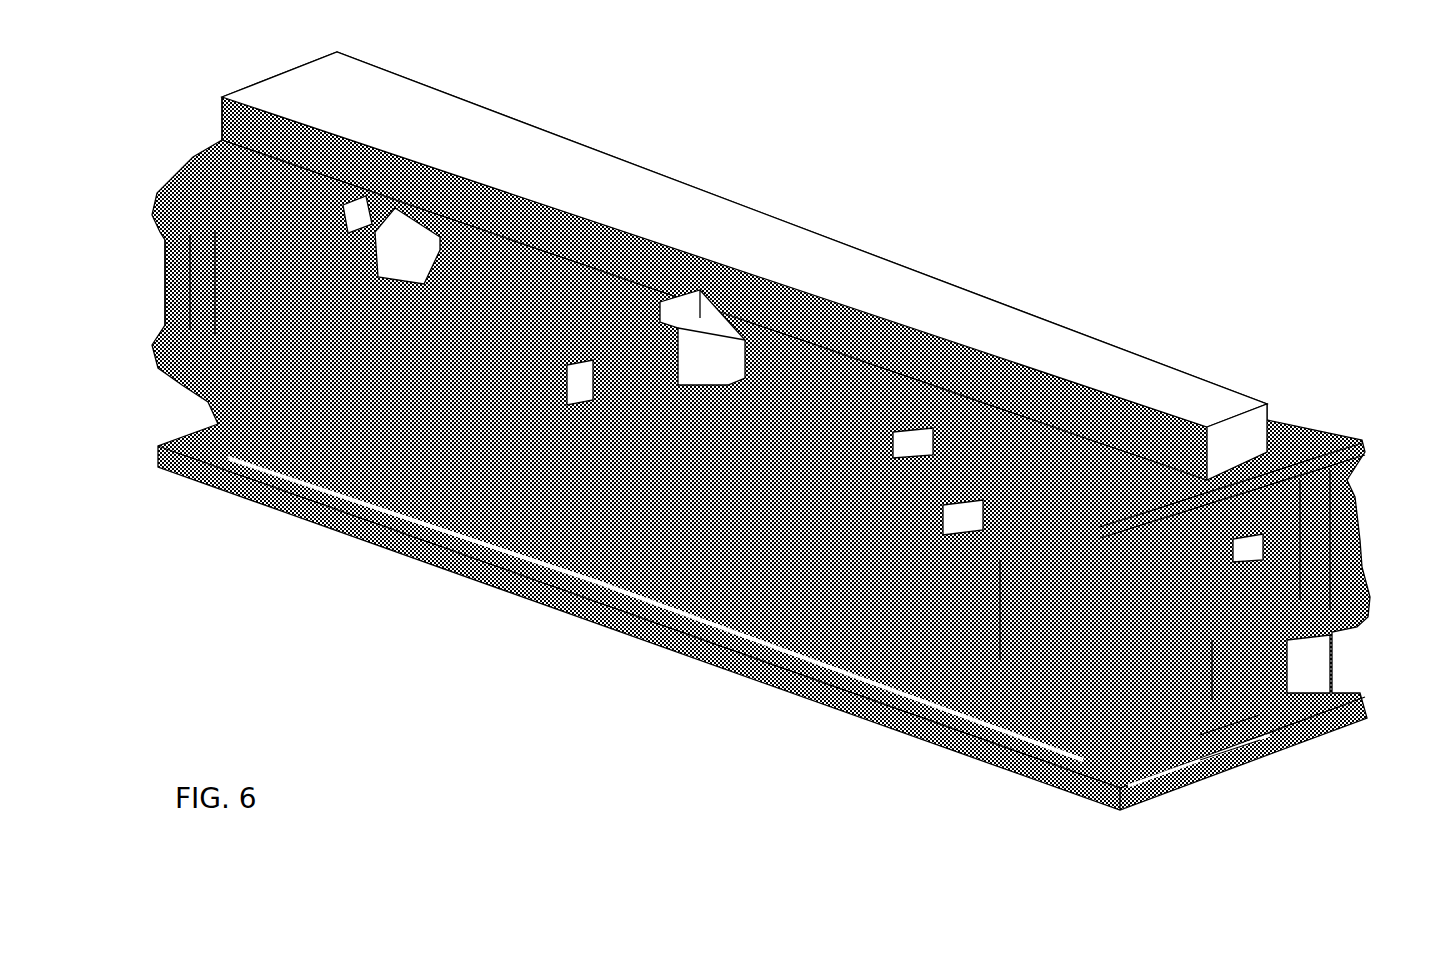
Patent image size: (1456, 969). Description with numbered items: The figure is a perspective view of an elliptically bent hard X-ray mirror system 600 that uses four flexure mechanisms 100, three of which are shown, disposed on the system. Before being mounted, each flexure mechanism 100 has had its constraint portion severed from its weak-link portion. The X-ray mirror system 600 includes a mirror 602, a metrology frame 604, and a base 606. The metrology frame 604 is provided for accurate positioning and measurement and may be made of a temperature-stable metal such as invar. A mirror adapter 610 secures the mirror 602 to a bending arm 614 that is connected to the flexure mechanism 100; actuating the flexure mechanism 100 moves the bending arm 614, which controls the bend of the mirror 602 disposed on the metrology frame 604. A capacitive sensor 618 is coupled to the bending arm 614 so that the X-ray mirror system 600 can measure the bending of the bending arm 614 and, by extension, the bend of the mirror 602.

The X-ray mirror system 600 is at (1268, 88).
The mirror 602 is at (666, 190).
The metrology frame 604 is at (713, 380).
The base 606 is at (323, 522).
The mirror adapter 610 is at (1172, 485).
The bending arm 614 is at (1212, 650).
The capacitive sensor 618 is at (1230, 745).
The flexure mechanism 100 is at (150, 272).